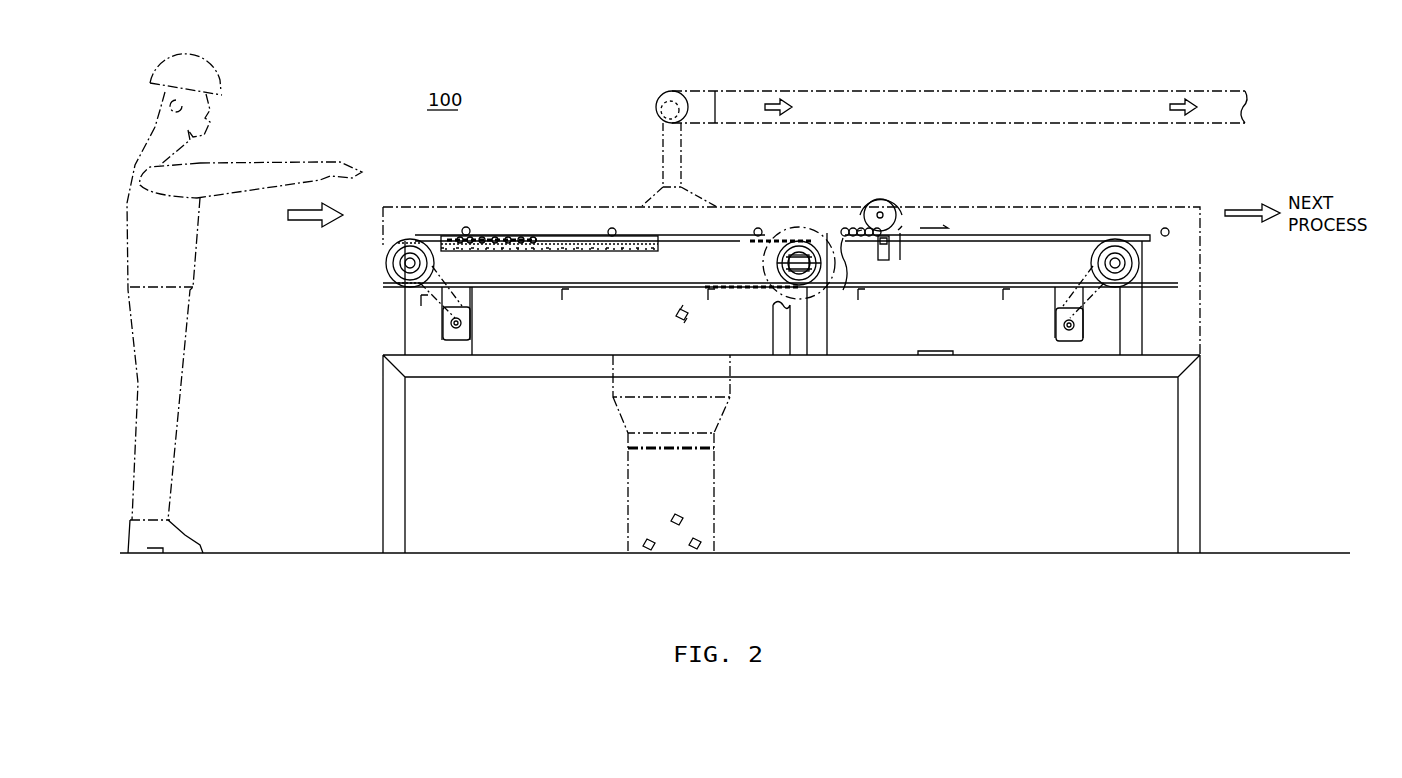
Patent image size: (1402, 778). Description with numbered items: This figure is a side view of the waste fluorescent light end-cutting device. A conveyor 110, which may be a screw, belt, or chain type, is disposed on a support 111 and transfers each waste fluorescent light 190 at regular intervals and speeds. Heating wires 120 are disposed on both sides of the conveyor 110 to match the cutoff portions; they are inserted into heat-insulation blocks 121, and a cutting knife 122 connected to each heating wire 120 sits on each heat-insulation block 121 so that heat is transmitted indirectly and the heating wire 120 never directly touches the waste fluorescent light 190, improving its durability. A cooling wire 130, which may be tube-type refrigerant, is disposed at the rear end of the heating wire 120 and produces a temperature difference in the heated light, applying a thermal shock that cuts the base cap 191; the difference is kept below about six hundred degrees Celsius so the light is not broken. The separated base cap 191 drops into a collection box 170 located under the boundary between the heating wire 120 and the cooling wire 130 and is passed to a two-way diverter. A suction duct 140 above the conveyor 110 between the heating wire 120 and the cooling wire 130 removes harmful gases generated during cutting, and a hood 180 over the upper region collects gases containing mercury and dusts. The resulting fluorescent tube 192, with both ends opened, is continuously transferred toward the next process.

The conveyor 110 is at (525, 236).
The support 111 is at (383, 441).
The heating wires 120 is at (578, 236).
The heat-insulation blocks 121 is at (587, 249).
The cutting knife 122 is at (627, 236).
The cooling wire 130 is at (682, 232).
The suction duct 140 is at (937, 90).
The collection box 170 is at (628, 487).
The hood 180 is at (1155, 208).
The waste fluorescent light 190 is at (467, 227).
The base cap 191 is at (689, 318).
The fluorescent tube 192 is at (843, 228).